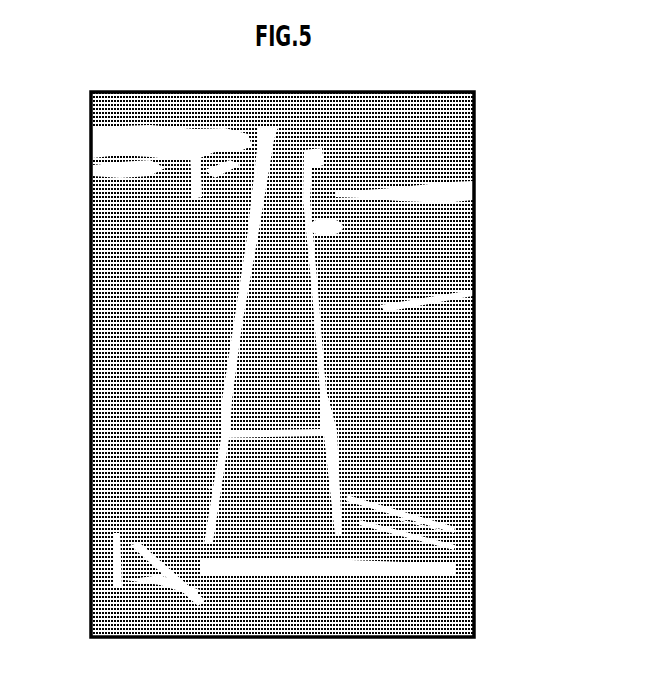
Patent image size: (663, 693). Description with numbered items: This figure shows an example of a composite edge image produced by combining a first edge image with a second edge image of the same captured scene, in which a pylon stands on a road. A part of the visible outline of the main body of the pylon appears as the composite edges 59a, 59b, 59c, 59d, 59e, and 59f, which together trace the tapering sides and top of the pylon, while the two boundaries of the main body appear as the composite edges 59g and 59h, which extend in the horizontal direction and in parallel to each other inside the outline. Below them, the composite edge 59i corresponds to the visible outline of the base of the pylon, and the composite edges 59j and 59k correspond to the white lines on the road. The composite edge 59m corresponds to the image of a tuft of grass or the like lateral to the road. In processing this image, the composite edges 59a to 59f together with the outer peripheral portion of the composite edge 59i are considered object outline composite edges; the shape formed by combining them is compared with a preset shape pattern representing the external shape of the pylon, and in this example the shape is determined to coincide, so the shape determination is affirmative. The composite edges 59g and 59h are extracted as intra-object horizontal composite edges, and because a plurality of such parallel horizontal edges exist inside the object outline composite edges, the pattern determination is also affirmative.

The composite edge 59a is at (237, 325).
The composite edge 59b is at (287, 131).
The composite edge 59c is at (320, 325).
The composite edge 59d is at (325, 380).
The composite edge 59e is at (205, 490).
The composite edge 59f is at (342, 463).
The composite edge 59g is at (269, 238).
The composite edge 59h is at (263, 433).
The composite edge 59i is at (218, 588).
The composite edge 59j is at (428, 307).
The composite edge 59k is at (443, 508).
The composite edge 59m is at (428, 190).